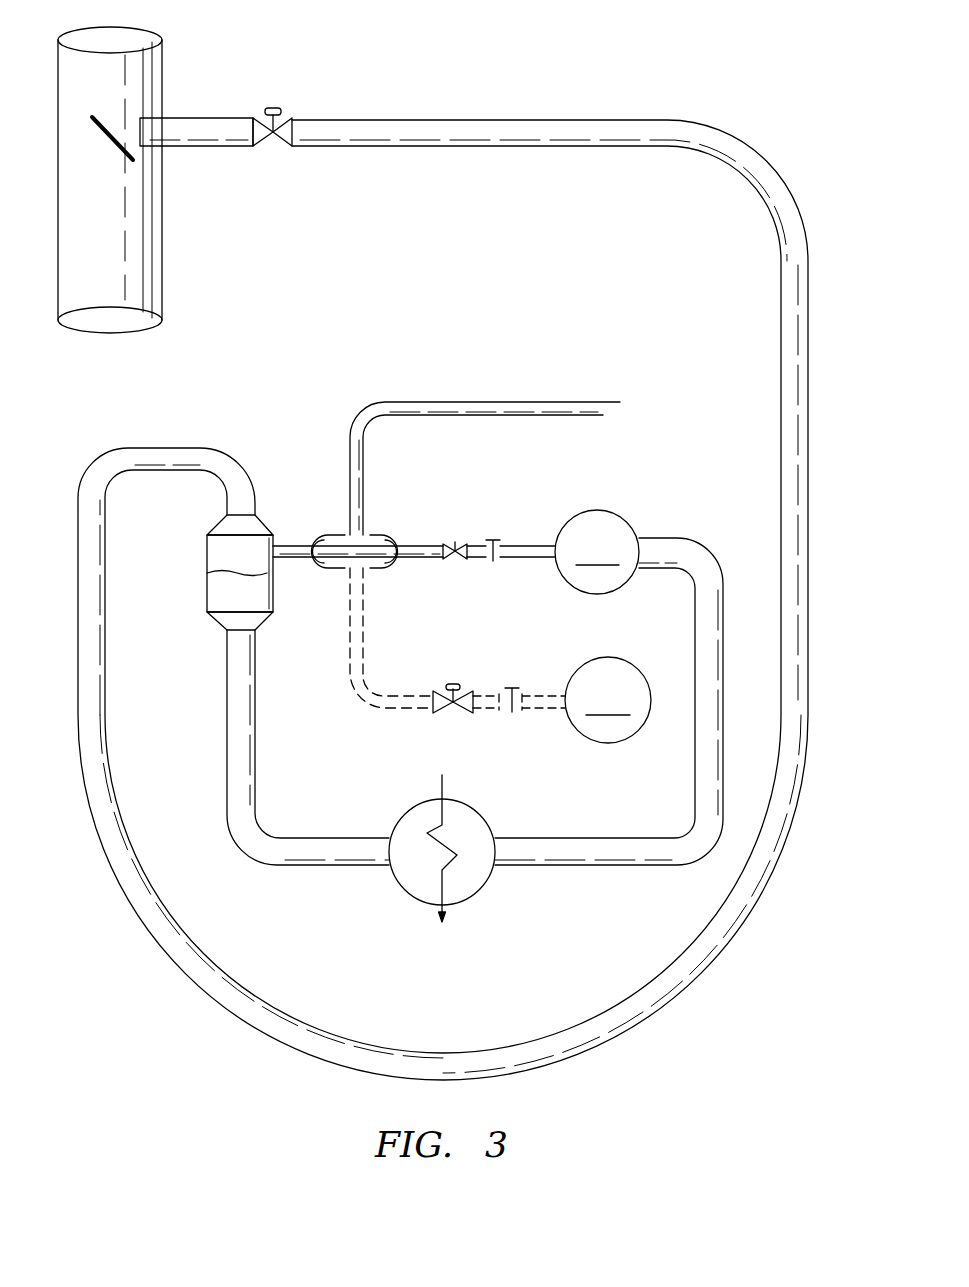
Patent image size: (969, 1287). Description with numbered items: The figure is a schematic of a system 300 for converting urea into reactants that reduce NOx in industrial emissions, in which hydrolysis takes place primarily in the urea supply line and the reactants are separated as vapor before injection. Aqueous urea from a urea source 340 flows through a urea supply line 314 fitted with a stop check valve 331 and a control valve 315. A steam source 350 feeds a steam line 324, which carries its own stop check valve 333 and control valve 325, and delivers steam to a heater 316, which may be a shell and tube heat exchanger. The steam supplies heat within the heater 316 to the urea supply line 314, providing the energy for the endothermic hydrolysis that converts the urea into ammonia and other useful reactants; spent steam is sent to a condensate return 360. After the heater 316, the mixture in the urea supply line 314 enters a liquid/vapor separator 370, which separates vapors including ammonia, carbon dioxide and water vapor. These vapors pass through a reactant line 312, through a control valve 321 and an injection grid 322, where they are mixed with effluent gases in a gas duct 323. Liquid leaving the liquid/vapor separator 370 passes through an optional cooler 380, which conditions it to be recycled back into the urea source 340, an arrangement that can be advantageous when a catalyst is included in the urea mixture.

The system 300 is at (408, 553).
The reactant line 312 is at (400, 115).
The urea supply line 314 is at (533, 530).
The control valve 315 is at (459, 530).
The heater 316 is at (381, 527).
The control valve 321 is at (276, 100).
The injection grid 322 is at (169, 158).
The gas duct 323 is at (150, 273).
The steam line 324 is at (535, 675).
The control valve 325 is at (451, 668).
The stop check valve 331 is at (492, 563).
The stop check valve 333 is at (512, 715).
The urea source 340 is at (597, 552).
The steam source 350 is at (608, 700).
The condensate return 360 is at (603, 408).
The liquid/vapor separator 370 is at (277, 626).
The cooler 380 is at (486, 904).